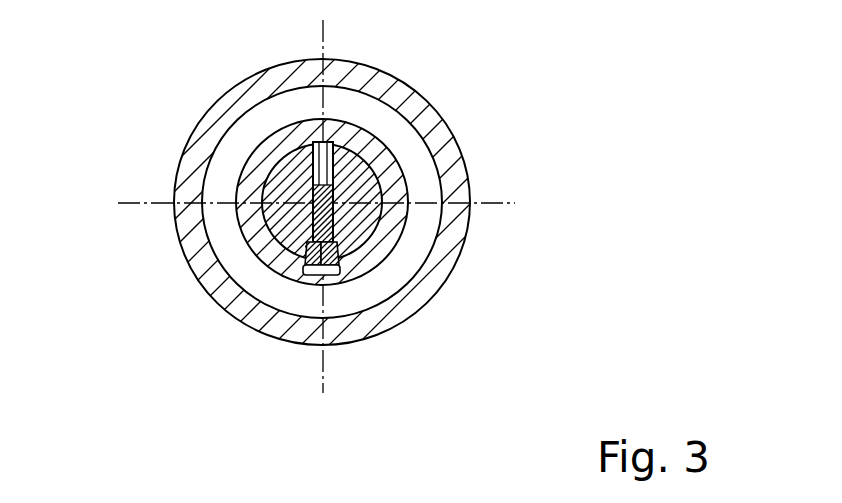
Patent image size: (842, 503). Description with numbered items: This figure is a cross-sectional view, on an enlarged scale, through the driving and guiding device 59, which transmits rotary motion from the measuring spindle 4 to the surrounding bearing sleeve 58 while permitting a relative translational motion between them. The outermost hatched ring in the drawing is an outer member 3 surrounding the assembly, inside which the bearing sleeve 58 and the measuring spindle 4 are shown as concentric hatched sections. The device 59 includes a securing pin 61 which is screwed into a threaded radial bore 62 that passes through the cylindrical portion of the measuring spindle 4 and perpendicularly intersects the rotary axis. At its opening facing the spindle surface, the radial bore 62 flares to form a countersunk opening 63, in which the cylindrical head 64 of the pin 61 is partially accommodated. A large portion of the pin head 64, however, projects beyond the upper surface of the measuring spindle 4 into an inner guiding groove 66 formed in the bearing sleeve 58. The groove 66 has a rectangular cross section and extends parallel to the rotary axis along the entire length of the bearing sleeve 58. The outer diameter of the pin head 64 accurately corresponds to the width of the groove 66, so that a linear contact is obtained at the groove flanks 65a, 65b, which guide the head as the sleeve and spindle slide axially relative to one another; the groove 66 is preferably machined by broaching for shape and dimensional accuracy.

The outer housing ring 3 is at (397, 92).
The measuring spindle 4 is at (348, 160).
The bearing sleeve 58 is at (390, 165).
The driving and guiding device 59 is at (260, 327).
The securing pin 61 is at (296, 213).
The threaded radial bore 62 is at (312, 145).
The countersunk opening 63 is at (402, 227).
The pin head 64 is at (328, 280).
The groove flank 65a is at (302, 272).
The groove flank 65b is at (342, 282).
The guiding groove 66 is at (296, 263).